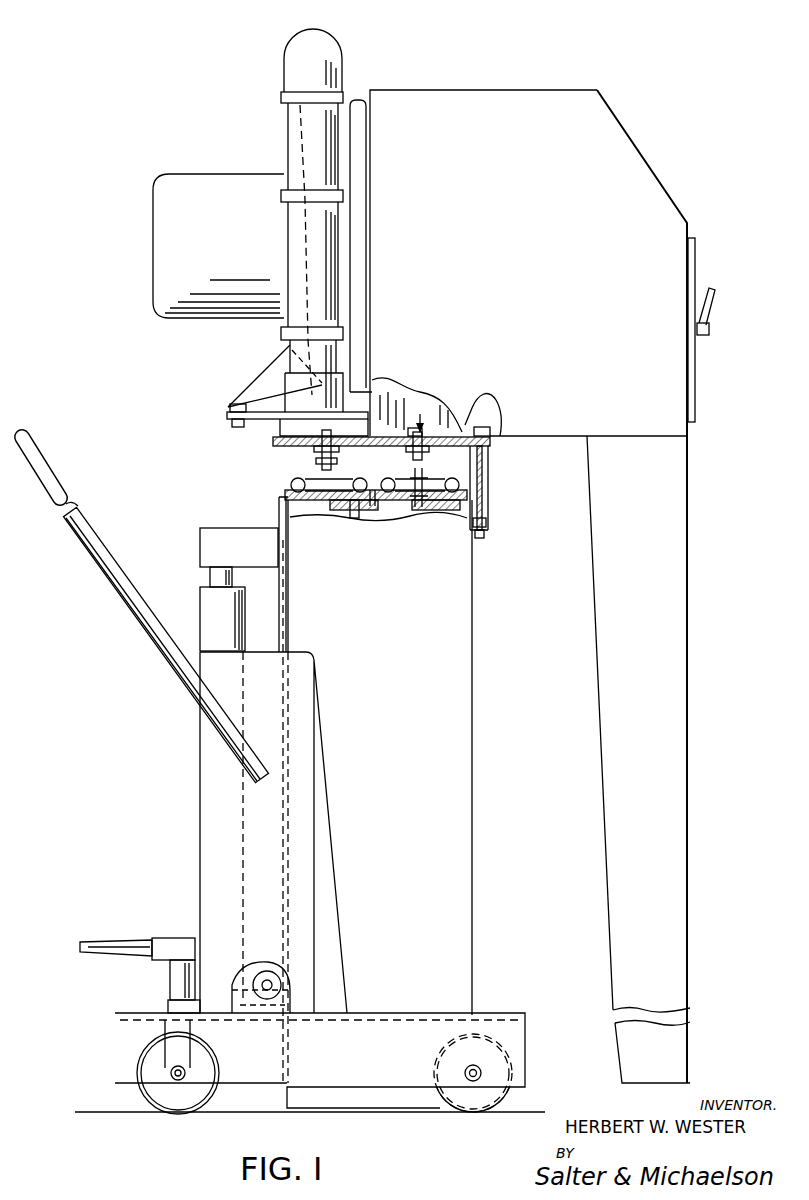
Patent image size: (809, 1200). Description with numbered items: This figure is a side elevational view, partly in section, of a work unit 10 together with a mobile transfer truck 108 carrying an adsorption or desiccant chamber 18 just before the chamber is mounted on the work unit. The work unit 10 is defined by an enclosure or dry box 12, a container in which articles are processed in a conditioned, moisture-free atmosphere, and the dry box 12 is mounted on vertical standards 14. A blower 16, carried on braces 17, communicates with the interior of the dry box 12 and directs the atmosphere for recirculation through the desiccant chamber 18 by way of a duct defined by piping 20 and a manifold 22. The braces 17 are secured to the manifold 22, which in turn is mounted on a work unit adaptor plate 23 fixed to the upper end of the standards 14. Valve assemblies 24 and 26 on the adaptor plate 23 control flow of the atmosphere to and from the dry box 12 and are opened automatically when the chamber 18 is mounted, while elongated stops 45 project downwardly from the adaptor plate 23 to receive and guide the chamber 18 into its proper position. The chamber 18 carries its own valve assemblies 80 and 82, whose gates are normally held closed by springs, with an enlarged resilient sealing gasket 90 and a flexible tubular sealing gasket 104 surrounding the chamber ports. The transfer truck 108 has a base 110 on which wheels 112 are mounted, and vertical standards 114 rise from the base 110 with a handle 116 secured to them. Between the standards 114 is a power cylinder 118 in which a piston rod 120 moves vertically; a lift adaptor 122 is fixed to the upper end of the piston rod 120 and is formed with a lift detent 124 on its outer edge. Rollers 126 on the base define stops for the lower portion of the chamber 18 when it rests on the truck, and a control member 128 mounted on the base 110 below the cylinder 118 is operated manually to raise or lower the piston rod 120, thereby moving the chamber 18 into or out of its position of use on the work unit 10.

The work unit 10 is at (518, 78).
The dry box 12 is at (625, 160).
The vertical standards 14 is at (690, 532).
The blower 16 is at (352, 142).
The braces 17 is at (282, 378).
The desiccant chamber 18 is at (478, 633).
The piping 20 is at (325, 40).
The manifold 22 is at (272, 440).
The work unit adaptor plate 23 is at (460, 435).
The valve assembly 24 is at (312, 452).
The valve assembly 26 is at (410, 456).
The elongated stops 45 is at (492, 497).
The valve assembly 80 is at (343, 514).
The valve assembly 82 is at (416, 514).
The resilient sealing gasket 90 is at (288, 486).
The flexible tubular sealing gasket 104 is at (458, 485).
The mobile transfer truck 108 is at (334, 775).
The base 110 is at (388, 1032).
The wheels 112 is at (180, 1100).
The vertical standards 114 is at (298, 860).
The handle 116 is at (82, 546).
The power cylinder 118 is at (202, 603).
The piston rod 120 is at (212, 575).
The lift adaptor 122 is at (225, 528).
The lift detent 124 is at (283, 540).
The rollers 126 is at (280, 975).
The control member 128 is at (158, 955).